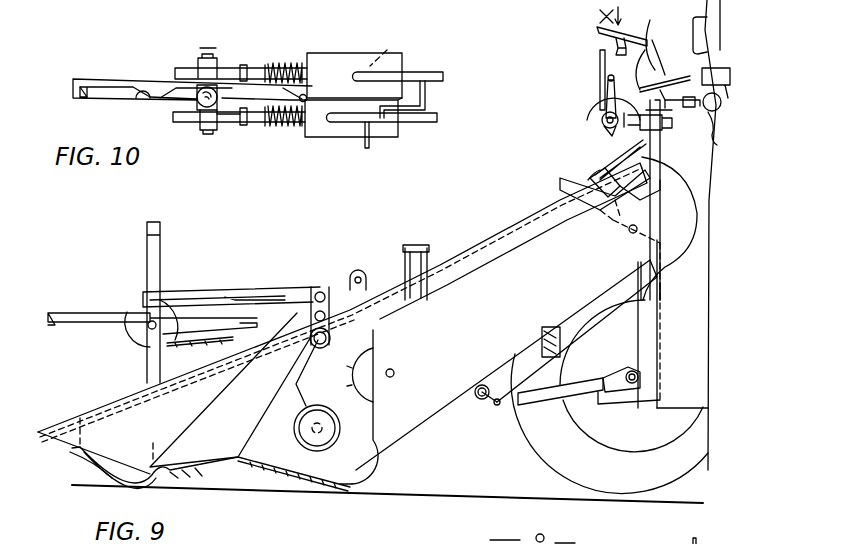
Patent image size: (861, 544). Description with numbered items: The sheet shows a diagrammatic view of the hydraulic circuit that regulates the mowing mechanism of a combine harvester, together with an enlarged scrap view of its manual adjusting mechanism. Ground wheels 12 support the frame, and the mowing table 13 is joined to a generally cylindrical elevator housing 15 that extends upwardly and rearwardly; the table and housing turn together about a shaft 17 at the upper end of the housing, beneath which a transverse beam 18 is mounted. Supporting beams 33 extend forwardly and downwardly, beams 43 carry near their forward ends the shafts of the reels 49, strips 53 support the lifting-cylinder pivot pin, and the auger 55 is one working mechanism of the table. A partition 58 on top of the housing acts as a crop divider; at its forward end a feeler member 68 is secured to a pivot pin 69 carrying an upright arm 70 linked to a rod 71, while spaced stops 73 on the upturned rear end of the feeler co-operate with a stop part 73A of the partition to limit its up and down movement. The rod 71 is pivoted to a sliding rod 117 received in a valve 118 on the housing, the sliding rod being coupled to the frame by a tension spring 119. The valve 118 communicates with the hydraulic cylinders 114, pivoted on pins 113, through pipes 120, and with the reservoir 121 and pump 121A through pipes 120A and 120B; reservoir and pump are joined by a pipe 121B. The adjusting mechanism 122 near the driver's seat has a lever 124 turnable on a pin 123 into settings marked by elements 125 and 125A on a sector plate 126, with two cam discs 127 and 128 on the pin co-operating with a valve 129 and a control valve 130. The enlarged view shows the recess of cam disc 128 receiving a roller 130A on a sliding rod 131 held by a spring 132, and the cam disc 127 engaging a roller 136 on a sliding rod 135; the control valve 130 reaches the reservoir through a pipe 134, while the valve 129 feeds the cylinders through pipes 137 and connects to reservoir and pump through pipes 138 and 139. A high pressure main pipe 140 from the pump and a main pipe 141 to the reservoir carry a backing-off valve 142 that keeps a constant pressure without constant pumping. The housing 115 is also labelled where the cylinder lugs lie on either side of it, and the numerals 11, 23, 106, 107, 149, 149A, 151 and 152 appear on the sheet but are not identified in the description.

In FIG. 9, the frame 11 is at (635, 334).
In FIG. 9, the ground wheels 12 is at (562, 479).
In FIG. 9, the mowing table 13 is at (349, 486).
In FIG. 9, the elevator housing 15 is at (390, 446).
In FIG. 9, the shaft 17 is at (632, 234).
In FIG. 9, the beam 18 is at (480, 401).
In FIG. 9, the hydraulic cylinder 23 is at (542, 393).
In FIG. 9, the supporting beams 33 is at (262, 388).
In FIG. 9, the beams 43 is at (206, 290).
In FIG. 9, the reels 49 is at (86, 330).
In FIG. 9, the strips 53 is at (360, 276).
In FIG. 9, the auger 55 is at (306, 455).
In FIG. 9, the partition 58 is at (510, 232).
In FIG. 9, the feeler member 68 is at (84, 470).
In FIG. 9, the pivot pin 69 is at (72, 452).
In FIG. 9, the upright arm 70 is at (88, 431).
In FIG. 9, the rod 71 is at (110, 398).
In FIG. 9, the spaced stops 73 is at (156, 444).
In FIG. 9, the part of partition 73A is at (138, 464).
In FIG. 9, the bracket 106 is at (400, 255).
In FIG. 9, the bracket cap 107 is at (421, 244).
In FIG. 9, the pins 113 is at (498, 408).
In FIG. 9, the hydraulic cylinders 114 is at (547, 406).
In FIG. 9, the housing 115 is at (618, 376).
In FIG. 9, the sliding rod 117 is at (590, 196).
In FIG. 9, the valve 118 is at (590, 185).
In FIG. 9, the tension spring 119 is at (618, 222).
In FIG. 9, the pipes 120 is at (670, 350).
In FIG. 9, the pipe 120A is at (622, 162).
In FIG. 10, the pipe 120B is at (372, 150).
In FIG. 9, the pipe 120B is at (588, 178).
In FIG. 9, the reservoir 121 is at (727, 66).
In FIG. 9, the pump 121A is at (722, 108).
In FIG. 9, the pipe 121B is at (731, 93).
In FIG. 9, the adjusting mechanism 122 is at (598, 132).
In FIG. 9, the pin 123 is at (598, 120).
In FIG. 10, the lever 124 is at (200, 91).
In FIG. 9, the lever 124 is at (600, 70).
In FIG. 10, the angular setting element 125 is at (143, 99).
In FIG. 10, the angular setting element 125A is at (78, 100).
In FIG. 10, the sector plate 126 is at (112, 84).
In FIG. 9, the sector plate 126 is at (590, 110).
In FIG. 10, the cam disc 127 is at (183, 123).
In FIG. 9, the cam disc 127 is at (603, 90).
In FIG. 10, the cam disc 128 is at (222, 60).
In FIG. 10, the valve 129 is at (323, 138).
In FIG. 9, the valve 129 is at (668, 142).
In FIG. 10, the control valve 130 is at (337, 53).
In FIG. 10, the roller 130A is at (245, 42).
In FIG. 10, the sliding rod 131 is at (258, 63).
In FIG. 10, the spring 132 is at (274, 62).
In FIG. 10, the pipe 134 is at (390, 50).
In FIG. 10, the sliding rod 135 is at (250, 128).
In FIG. 10, the roller 136 is at (228, 127).
In FIG. 9, the pipes 137 is at (655, 188).
In FIG. 10, the pipe 138 is at (428, 98).
In FIG. 9, the pipe 138 is at (655, 60).
In FIG. 10, the pipe 139 is at (430, 125).
In FIG. 9, the pipe 139 is at (637, 42).
In FIG. 9, the high pressure main pipe 140 is at (668, 122).
In FIG. 10, the main pipe 141 is at (440, 74).
In FIG. 9, the main pipe 141 is at (668, 82).
In FIG. 9, the backing-off valve 142 is at (718, 133).
In FIG. 9, the pin 149 is at (542, 534).
In FIG. 9, the bracket 149A is at (515, 540).
In FIG. 9, the link 151 is at (562, 538).
In FIG. 9, the bracket 152 is at (616, 543).